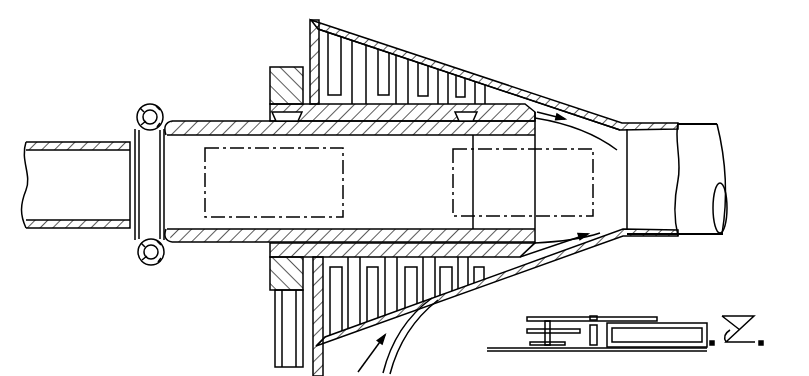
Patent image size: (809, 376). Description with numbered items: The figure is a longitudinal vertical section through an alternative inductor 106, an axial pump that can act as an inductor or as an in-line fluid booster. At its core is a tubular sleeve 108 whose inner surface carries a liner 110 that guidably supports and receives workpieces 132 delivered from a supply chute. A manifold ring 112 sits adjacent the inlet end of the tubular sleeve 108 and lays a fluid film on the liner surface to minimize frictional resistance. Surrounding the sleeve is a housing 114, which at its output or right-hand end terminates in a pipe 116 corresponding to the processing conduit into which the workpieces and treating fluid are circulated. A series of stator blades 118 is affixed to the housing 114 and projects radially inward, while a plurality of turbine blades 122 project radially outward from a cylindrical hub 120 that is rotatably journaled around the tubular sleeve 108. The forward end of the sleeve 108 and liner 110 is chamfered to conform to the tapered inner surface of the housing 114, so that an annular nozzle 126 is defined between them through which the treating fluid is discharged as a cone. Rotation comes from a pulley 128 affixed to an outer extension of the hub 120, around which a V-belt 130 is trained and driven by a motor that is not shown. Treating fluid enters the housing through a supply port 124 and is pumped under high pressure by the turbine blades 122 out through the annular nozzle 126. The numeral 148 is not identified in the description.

The inductor 106 is at (548, 86).
The tubular sleeve 108 is at (391, 138).
The liner 110 is at (369, 138).
The manifold ring 112 is at (140, 258).
The housing 114 is at (538, 272).
The pipe 116 is at (707, 133).
The stator blades 118 is at (338, 40).
The cylindrical hub 120 is at (602, 149).
The turbine blades 122 is at (367, 50).
The supply port 124 is at (405, 316).
The annular nozzle 126 is at (560, 100).
The pulley 128 is at (270, 82).
The V-belt 130 is at (305, 62).
The workpieces 132 is at (260, 207).
The mounting stem 148 is at (416, 333).